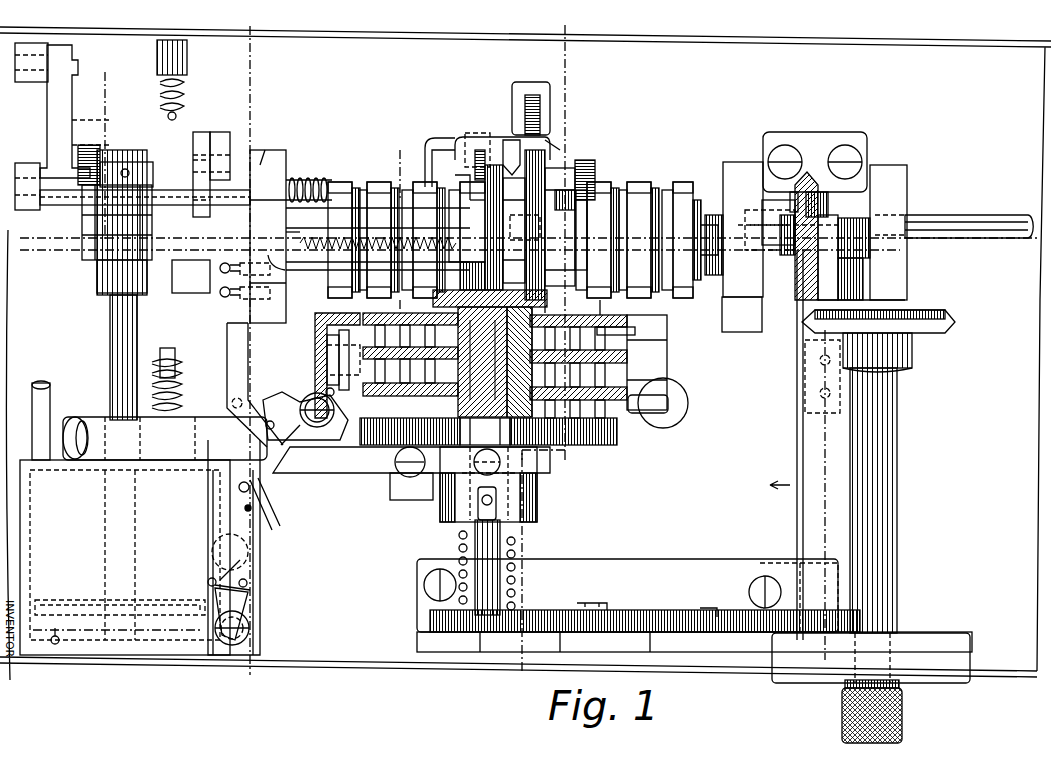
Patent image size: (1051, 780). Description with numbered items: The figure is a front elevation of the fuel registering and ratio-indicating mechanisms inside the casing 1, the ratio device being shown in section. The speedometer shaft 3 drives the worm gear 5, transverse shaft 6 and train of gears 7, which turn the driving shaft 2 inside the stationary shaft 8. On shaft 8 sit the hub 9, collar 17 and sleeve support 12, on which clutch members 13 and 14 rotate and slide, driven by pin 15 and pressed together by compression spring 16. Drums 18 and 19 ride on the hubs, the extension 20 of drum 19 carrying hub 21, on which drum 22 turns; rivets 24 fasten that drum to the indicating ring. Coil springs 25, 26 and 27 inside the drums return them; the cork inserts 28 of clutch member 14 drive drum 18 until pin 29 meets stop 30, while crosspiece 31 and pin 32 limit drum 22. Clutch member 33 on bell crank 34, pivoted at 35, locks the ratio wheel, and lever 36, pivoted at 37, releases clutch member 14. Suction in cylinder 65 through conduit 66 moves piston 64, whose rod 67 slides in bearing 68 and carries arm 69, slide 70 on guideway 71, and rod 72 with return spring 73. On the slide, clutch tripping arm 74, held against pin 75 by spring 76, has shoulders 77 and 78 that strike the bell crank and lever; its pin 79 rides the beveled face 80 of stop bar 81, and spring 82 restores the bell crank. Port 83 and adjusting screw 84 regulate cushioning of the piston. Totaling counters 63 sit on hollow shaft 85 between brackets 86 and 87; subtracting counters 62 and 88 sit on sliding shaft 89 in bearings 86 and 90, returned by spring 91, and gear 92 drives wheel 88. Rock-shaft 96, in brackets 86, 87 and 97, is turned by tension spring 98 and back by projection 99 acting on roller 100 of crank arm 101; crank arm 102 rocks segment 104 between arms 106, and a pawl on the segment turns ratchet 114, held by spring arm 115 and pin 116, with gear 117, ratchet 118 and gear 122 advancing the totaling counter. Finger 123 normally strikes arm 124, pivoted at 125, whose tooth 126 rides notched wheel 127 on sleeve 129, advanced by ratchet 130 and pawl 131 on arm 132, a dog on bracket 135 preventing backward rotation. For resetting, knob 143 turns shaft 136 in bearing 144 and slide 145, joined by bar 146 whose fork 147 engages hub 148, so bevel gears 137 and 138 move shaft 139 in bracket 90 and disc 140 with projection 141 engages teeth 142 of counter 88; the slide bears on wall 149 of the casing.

The casing 1 is at (420, 663).
The driving shaft 2 is at (497, 683).
The speedometer shaft 3 is at (985, 232).
The worm gear 5 is at (250, 27).
The transverse shaft 6 is at (800, 503).
The train of gears 7 is at (520, 625).
The stationary shaft 8 is at (293, 217).
The hub 9 is at (495, 362).
The support 12 is at (560, 440).
The clutch member 13 is at (537, 490).
The clutch member 14 is at (572, 445).
The pin 15 is at (495, 503).
The compression spring 16 is at (458, 540).
The collar 17 is at (490, 298).
The drum 18 is at (309, 423).
The drum 19 is at (330, 350).
The extension 20 is at (520, 335).
The hub 21 is at (545, 325).
The drum 22 is at (345, 306).
The rivets 24 is at (392, 325).
The coil spring 25 is at (315, 325).
The coil spring 26 is at (632, 358).
The coil spring 27 is at (615, 312).
The flexible inserts 28 is at (590, 440).
The peripheral pin 29 is at (578, 394).
The post or stop 30 is at (665, 428).
The crosspiece 31 is at (655, 395).
The peripheral pin 32 is at (650, 335).
The clutch member 33 is at (330, 365).
The bell crank 34 is at (326, 380).
The pivot 35 is at (317, 415).
The lever 36 is at (385, 468).
The pivot 37 is at (410, 478).
The subtracting counter 62 is at (605, 185).
The total fuel consumption counter 63 is at (340, 182).
The piston 64 is at (160, 615).
The cylinder 65 is at (125, 557).
The conduit 66 is at (48, 395).
The piston rod 67 is at (122, 310).
The bearing 68 is at (108, 282).
The arm 69 is at (98, 450).
The slide 70 is at (250, 628).
The guideway 71 is at (195, 530).
The rod 72 is at (165, 352).
The spring 73 is at (180, 375).
The clutch tripping arm 74 is at (265, 535).
The pin 75 is at (254, 508).
The spring 76 is at (255, 592).
The outer shoulder 77 is at (268, 490).
The inner shoulder 78 is at (262, 565).
The pin 79 is at (232, 410).
The beveled face 80 is at (242, 398).
The stationary stop bar 81 is at (255, 385).
The spring 82 is at (285, 440).
The port 83 is at (34, 650).
The adjusting screw 84 is at (58, 645).
The shaft 85 is at (289, 269).
The right hand bracket 86 is at (500, 258).
The left hand bracket 87 is at (268, 236).
The fraction indicating subtracting wheel 88 is at (683, 182).
The sliding shaft 89 is at (712, 260).
The bearing 90 is at (778, 295).
The spring 91 is at (277, 240).
The gear 92 is at (560, 180).
The oscillatory shaft 96 is at (272, 168).
The bracket 97 is at (28, 212).
The tension spring 98 is at (308, 178).
The angular projection 99 is at (158, 190).
The roller 100 is at (154, 357).
The crank arm 101 is at (220, 298).
The crank arm 102 is at (450, 135).
The segment 104 is at (532, 92).
The angular arms 106 is at (480, 150).
The ratchet wheel 114 is at (555, 190).
The spring arm 115 is at (530, 150).
The pin 116 is at (498, 145).
The gear 117 is at (505, 185).
The outer ratchet 118 is at (505, 150).
The gear 122 is at (475, 170).
The finger 123 is at (95, 262).
The arm 124 is at (66, 112).
The pivot 125 is at (58, 68).
The tooth 126 is at (75, 200).
The notched wheel 127 is at (92, 150).
The sleeve 129 is at (180, 170).
The ratchet 130 is at (215, 178).
The pawl 131 is at (203, 135).
The arm 132 is at (222, 140).
The bracket 135 is at (191, 276).
The shaft 136 is at (880, 525).
The beveled gear 137 is at (930, 325).
The gear 138 is at (797, 320).
The shaft 139 is at (795, 305).
The disc 140 is at (742, 314).
The tooth-like projection 141 is at (738, 228).
The teeth 142 is at (720, 230).
The knurled knob 143 is at (902, 708).
The bearing 144 is at (910, 360).
The slide 145 is at (871, 658).
The transverse bar 146 is at (835, 448).
The fork 147 is at (850, 298).
The hub 148 is at (862, 252).
The wall 149 is at (758, 672).